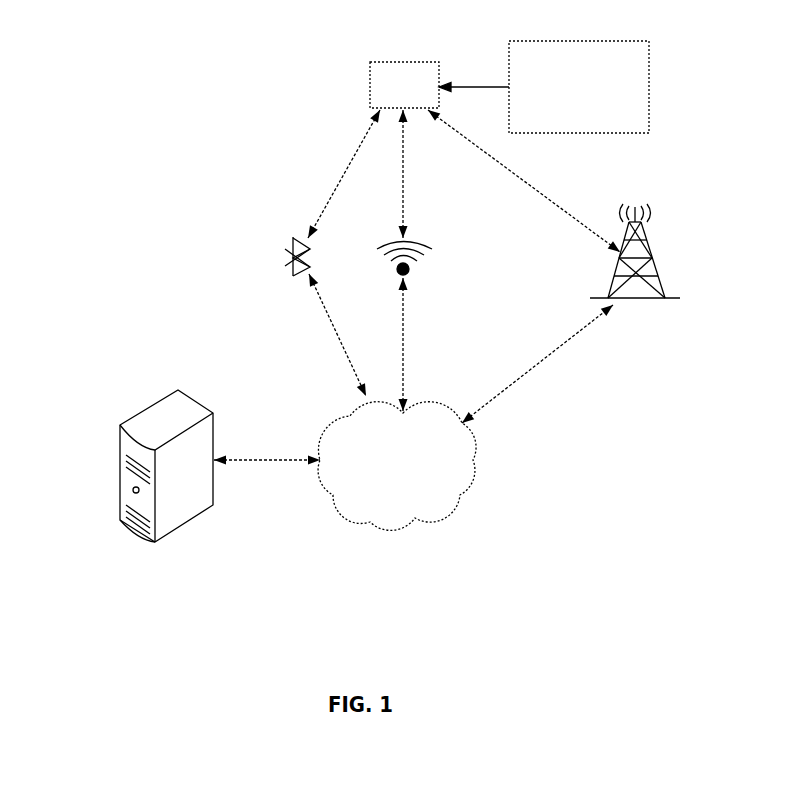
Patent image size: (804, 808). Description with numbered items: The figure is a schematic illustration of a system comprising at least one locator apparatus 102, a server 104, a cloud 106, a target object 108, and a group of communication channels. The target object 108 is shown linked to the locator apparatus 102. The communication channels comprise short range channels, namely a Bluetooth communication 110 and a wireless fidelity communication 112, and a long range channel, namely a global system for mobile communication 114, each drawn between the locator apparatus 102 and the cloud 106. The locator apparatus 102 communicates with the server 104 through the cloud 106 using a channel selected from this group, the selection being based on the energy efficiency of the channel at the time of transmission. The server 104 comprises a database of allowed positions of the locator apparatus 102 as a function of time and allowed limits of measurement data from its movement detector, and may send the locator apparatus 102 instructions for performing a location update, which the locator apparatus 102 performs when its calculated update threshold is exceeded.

The locator apparatus 102 is at (370, 92).
The server 104 is at (118, 446).
The cloud 106 is at (475, 463).
The target object 108 is at (649, 85).
The Bluetooth communication 110 is at (290, 246).
The wireless fidelity communication 112 is at (430, 252).
The global system for mobile communication 114 is at (650, 253).